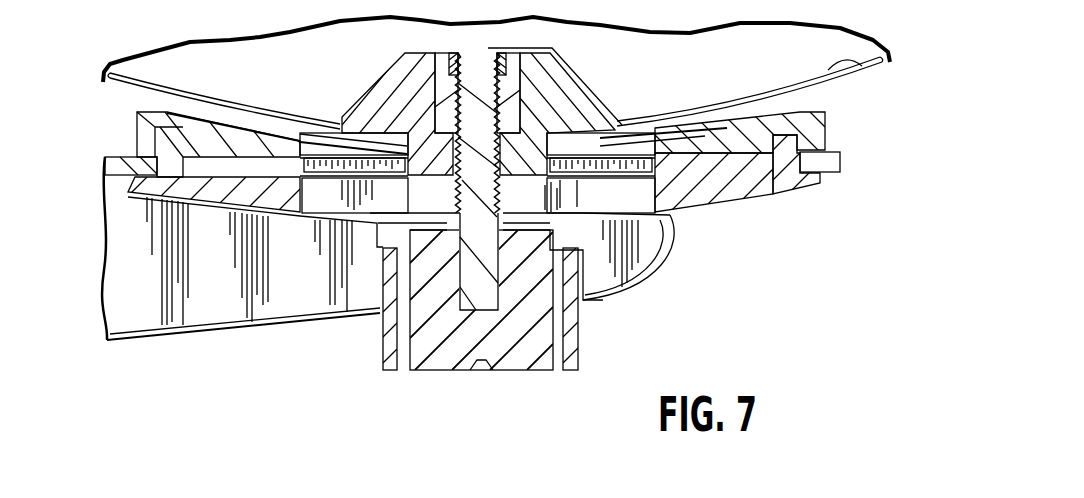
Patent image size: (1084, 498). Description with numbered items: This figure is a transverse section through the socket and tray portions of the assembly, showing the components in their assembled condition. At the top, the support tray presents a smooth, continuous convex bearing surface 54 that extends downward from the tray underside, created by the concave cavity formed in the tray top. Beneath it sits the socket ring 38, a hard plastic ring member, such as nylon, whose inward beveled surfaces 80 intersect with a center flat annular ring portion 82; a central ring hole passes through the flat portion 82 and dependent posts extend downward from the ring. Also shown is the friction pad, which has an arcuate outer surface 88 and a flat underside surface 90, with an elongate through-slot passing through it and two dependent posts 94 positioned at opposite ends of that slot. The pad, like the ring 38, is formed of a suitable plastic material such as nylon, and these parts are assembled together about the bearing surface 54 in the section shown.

The convex bearing surface 54 is at (877, 77).
The inward beveled surfaces 80 is at (750, 127).
The flat annular ring portion 82 is at (697, 140).
The socket ring 38 is at (747, 143).
The arcuate outer surface 88 is at (790, 193).
The dependent posts 94 is at (128, 193).
The flat underside surface 90 is at (137, 122).